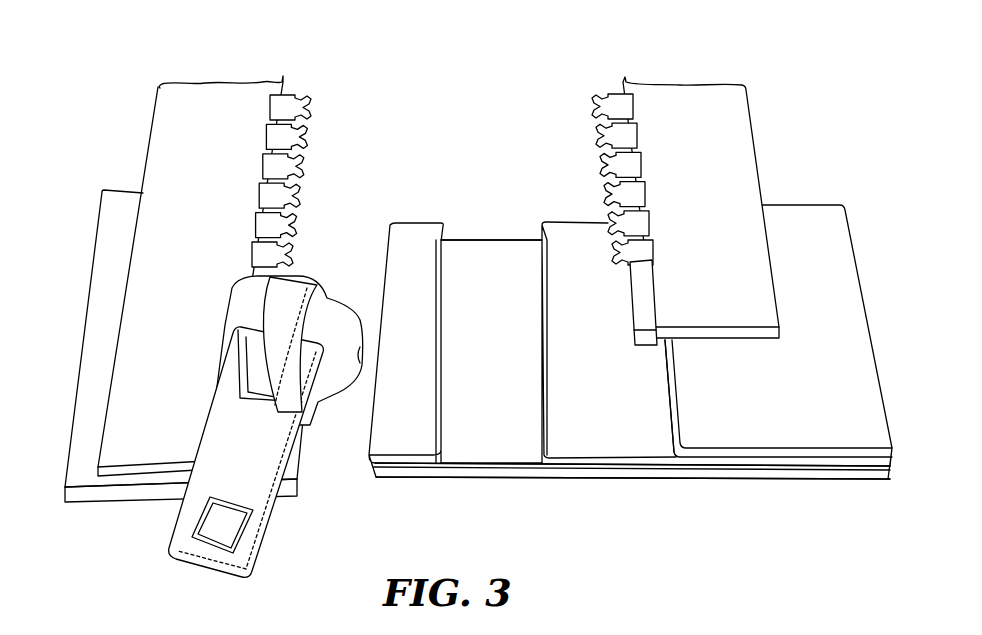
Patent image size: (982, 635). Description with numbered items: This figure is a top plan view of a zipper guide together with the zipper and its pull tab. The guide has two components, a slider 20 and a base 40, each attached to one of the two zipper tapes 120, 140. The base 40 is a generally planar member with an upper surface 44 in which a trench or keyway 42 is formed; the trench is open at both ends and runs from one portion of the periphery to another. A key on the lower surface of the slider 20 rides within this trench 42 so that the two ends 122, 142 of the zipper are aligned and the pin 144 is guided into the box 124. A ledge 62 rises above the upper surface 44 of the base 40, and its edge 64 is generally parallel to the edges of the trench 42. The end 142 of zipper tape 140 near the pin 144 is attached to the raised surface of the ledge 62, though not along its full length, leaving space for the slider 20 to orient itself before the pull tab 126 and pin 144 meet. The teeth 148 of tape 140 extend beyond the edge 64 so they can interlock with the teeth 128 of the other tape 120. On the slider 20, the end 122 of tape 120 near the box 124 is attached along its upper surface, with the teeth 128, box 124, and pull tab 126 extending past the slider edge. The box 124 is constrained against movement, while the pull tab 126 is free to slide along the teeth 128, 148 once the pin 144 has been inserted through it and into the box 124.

The slider 20 is at (122, 216).
The zipper tape 120 is at (197, 137).
The end of the zipper tape 122 is at (147, 405).
The box 124 is at (297, 468).
The pull tab 126 is at (253, 302).
The teeth 128 is at (303, 168).
The base 40 is at (732, 243).
The trench or keyway 42 is at (493, 262).
The upper surface 44 is at (615, 423).
The ledge 62 is at (832, 424).
The edge of the ledge 64 is at (668, 375).
The zipper tape 140 is at (723, 140).
The end of the zipper tape 142 is at (747, 316).
The pin 144 is at (642, 283).
The teeth 148 is at (598, 168).